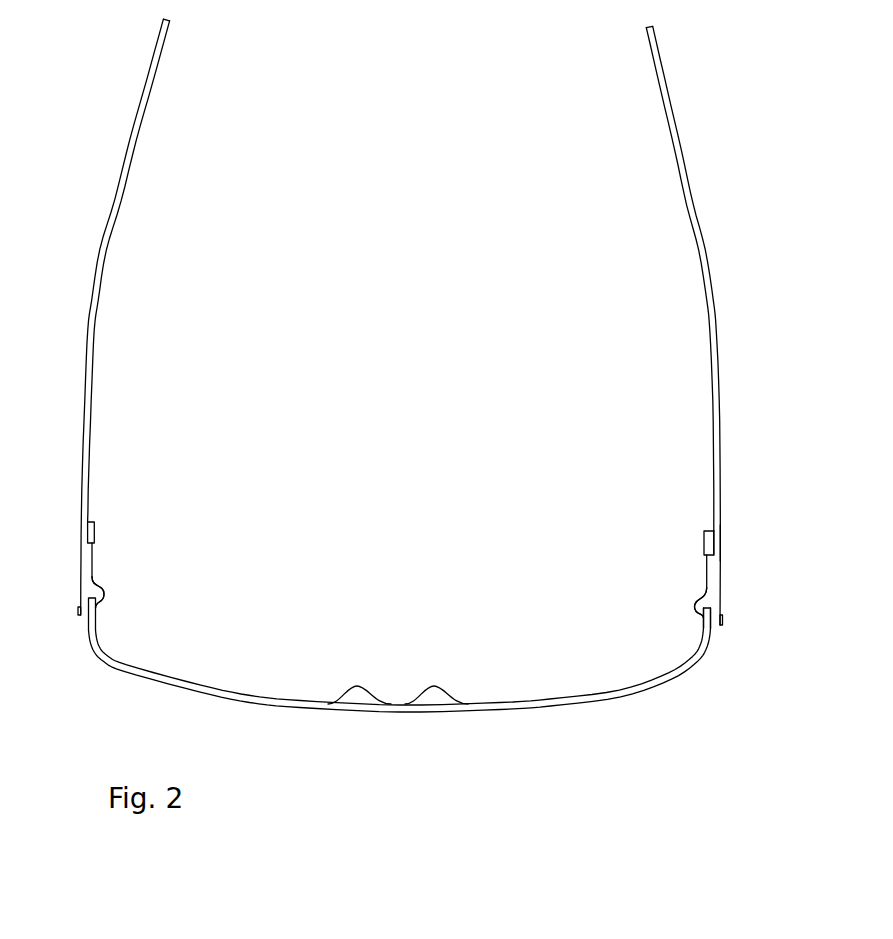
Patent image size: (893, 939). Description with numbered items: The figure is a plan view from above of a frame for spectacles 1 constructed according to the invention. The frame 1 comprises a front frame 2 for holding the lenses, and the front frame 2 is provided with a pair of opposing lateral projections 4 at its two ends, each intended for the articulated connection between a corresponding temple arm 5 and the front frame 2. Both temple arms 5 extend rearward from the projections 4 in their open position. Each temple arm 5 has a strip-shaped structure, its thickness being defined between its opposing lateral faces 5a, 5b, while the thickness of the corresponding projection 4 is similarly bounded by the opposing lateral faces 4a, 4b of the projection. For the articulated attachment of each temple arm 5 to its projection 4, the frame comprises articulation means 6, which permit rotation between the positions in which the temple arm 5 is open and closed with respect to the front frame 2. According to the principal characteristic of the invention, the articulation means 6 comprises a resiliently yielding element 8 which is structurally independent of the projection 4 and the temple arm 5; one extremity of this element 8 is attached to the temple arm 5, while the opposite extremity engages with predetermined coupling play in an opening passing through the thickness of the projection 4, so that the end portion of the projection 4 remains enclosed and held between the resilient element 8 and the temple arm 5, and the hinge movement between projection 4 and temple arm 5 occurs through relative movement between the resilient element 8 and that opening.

The frame for spectacles 1 is at (417, 424).
The front frame 2 is at (417, 690).
The lateral projection 4 is at (417, 651).
The lateral face of the projection 4a is at (703, 632).
The lateral face of the projection 4b is at (712, 630).
The temple arm 5 is at (425, 322).
The lateral face of the temple arm 5a is at (712, 508).
The lateral face of the temple arm 5b is at (720, 538).
The articulation means 6 is at (401, 538).
The resiliently yielding element 8 is at (94, 579).